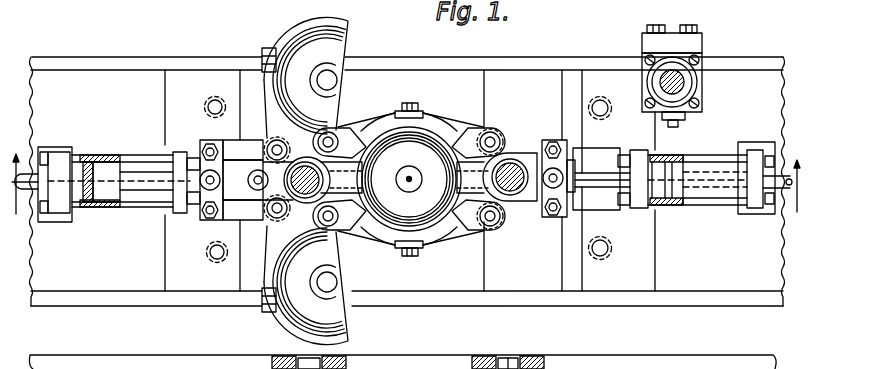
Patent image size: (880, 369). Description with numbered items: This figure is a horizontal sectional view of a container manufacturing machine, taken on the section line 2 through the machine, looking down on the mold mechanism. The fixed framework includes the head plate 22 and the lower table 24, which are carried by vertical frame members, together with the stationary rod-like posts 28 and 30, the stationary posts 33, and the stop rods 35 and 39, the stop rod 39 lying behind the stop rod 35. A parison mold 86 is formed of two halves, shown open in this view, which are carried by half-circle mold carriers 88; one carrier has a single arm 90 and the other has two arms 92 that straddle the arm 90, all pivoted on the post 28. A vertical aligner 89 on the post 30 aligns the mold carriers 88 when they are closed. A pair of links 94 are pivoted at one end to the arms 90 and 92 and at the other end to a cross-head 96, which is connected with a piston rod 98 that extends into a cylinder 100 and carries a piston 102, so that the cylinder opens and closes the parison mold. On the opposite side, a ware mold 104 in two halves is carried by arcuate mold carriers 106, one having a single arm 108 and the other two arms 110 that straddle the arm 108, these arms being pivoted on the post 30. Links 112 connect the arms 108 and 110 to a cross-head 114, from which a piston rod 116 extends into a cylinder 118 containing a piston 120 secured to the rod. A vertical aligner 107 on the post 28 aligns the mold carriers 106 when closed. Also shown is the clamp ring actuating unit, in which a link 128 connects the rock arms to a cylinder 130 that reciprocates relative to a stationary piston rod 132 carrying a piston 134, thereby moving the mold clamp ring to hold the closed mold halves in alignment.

The section line 2- 2 is at (408, 190).
The head plate 22 is at (752, 350).
The lower table 24 is at (88, 100).
The post 28 is at (363, 163).
The post 30 is at (500, 168).
The stationary posts 33 is at (207, 106).
The stop rod 35 is at (608, 254).
The stop rod 39 is at (607, 101).
The parison mold 86 is at (374, 100).
The mold carriers 88 is at (292, 40).
The vertical aligner 89 is at (431, 197).
The arm 90 is at (296, 142).
The arms 92 is at (297, 223).
The links 94 is at (247, 148).
The cross-head 96 is at (200, 163).
The piston rod 98 is at (107, 198).
The cylinder 100 is at (145, 172).
The piston 102 is at (87, 208).
The ware mold 104 is at (433, 157).
The mold carriers 106 is at (382, 115).
The vertical aligner 107 is at (398, 251).
The arm 108 is at (485, 128).
The arms 110 is at (470, 232).
The links 112 is at (506, 137).
The cross-head 114 is at (564, 190).
The piston rod 116 is at (601, 174).
The cylinder 118 is at (713, 184).
The piston 120 is at (668, 203).
The link 128 is at (687, 117).
The cylinder 130 is at (702, 97).
The piston rod 132 is at (685, 81).
The piston 134 is at (670, 70).